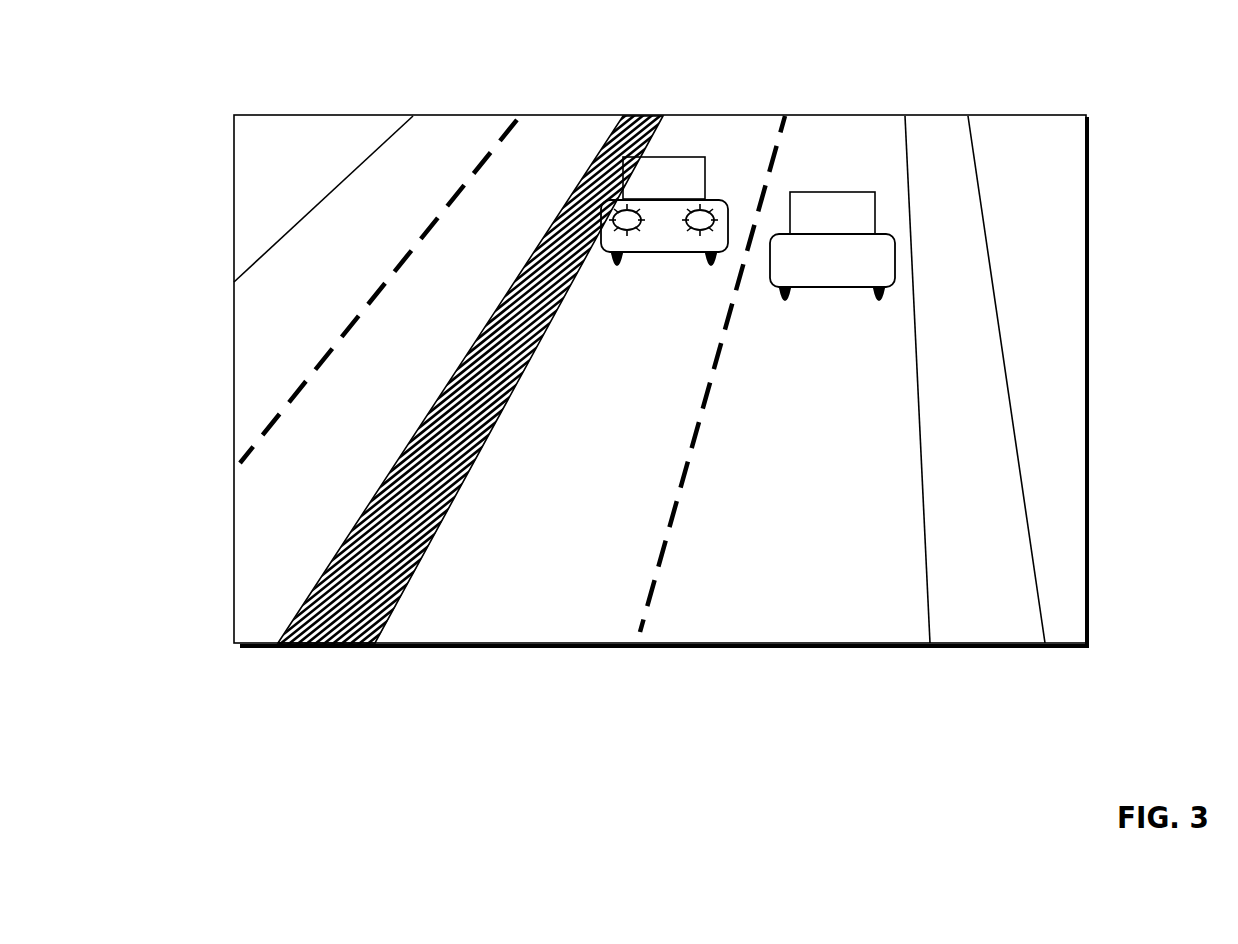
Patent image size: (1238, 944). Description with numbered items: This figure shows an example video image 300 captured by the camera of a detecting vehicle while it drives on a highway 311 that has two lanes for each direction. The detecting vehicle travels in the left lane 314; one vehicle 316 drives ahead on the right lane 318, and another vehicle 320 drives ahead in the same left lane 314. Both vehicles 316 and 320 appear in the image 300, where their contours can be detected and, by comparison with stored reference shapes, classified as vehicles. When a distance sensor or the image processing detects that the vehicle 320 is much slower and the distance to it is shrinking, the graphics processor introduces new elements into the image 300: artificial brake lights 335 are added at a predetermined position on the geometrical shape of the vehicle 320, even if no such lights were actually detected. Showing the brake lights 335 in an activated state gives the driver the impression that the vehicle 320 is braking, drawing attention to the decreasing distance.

The image 300 is at (1017, 58).
The highway 311 is at (257, 303).
The left lane 314 is at (545, 622).
The vehicle 316 is at (867, 192).
The right lane 318 is at (750, 590).
The vehicle 320 is at (680, 244).
The brake lights 335 is at (663, 270).